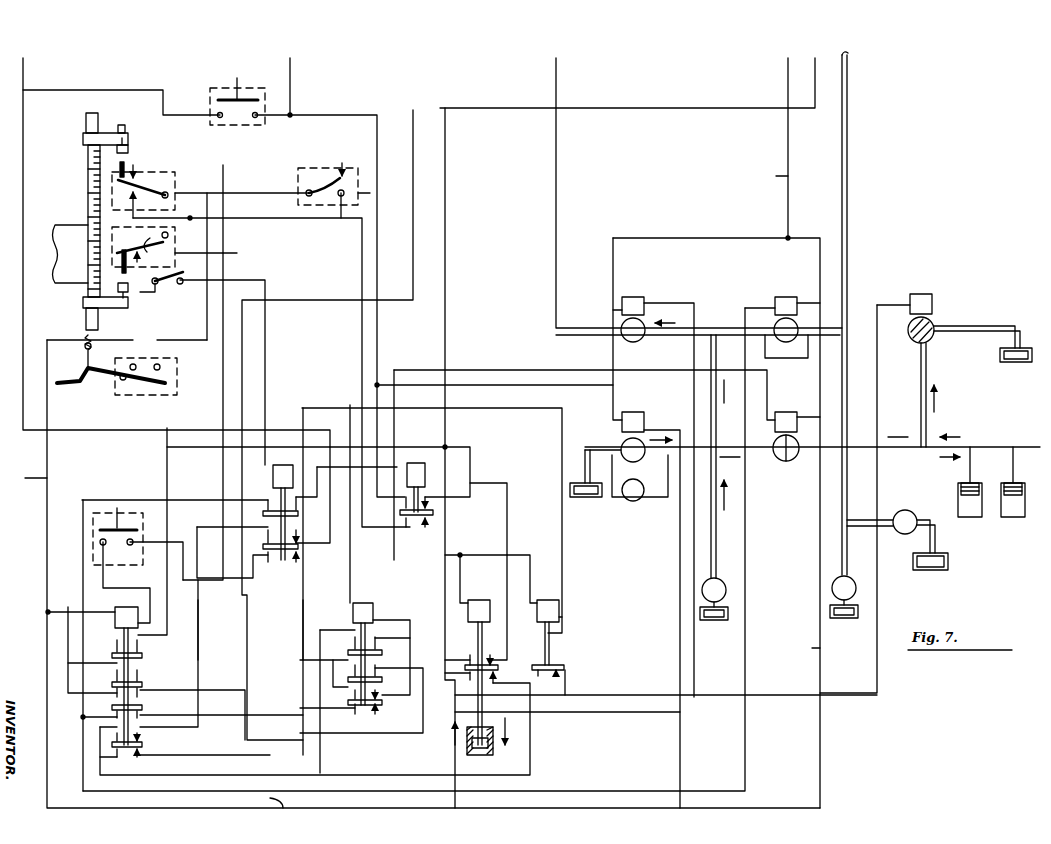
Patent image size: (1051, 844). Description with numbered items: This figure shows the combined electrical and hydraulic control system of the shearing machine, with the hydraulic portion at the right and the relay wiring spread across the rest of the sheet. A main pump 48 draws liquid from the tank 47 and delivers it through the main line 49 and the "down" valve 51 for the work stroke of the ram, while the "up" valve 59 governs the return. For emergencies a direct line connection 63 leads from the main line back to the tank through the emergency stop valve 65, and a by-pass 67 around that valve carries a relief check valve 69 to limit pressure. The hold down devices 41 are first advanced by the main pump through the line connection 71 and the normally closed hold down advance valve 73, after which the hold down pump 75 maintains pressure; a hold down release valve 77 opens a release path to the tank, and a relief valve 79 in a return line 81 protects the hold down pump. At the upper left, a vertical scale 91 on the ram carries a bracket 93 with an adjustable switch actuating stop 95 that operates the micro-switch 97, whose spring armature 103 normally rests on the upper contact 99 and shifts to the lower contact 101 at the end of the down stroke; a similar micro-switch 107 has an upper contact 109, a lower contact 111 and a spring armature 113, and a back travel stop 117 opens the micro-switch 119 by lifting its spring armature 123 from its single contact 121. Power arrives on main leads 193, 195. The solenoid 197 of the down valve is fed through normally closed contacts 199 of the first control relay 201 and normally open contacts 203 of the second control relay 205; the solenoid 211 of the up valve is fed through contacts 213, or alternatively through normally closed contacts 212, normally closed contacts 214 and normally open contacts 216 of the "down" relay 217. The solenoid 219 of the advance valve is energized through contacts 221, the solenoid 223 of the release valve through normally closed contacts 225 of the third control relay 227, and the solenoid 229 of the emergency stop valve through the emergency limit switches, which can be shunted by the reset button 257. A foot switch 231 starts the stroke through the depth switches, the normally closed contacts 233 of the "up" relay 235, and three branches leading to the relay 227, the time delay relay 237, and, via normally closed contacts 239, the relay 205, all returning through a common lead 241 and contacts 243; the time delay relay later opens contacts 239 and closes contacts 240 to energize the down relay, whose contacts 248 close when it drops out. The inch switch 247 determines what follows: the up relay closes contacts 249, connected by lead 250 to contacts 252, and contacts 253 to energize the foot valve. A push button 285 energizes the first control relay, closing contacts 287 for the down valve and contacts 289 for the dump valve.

The hold down devices 41 is at (958, 494).
The tank 47 is at (1015, 362).
The main pump 48 is at (730, 575).
The main line 49 is at (716, 440).
The "down" valve 51 is at (798, 337).
The "up" valve 59 is at (638, 340).
The direct line connection 63 is at (680, 440).
The emergency stop valve 65 is at (633, 462).
The by-pass 67 is at (614, 497).
The relief check valve 69 is at (645, 497).
The line connection 71 is at (866, 447).
The hold down advance valve 73 is at (786, 461).
The hold down pump 75 is at (852, 580).
The hold down release valve 77 is at (934, 327).
The relief valve 79 is at (902, 508).
The return line 81 is at (934, 540).
The vertical scale 91 is at (88, 160).
The bracket 93 is at (120, 125).
The switch actuating stop 95 is at (128, 150).
The micro-switch 97 is at (175, 182).
The upper contact 99 is at (134, 172).
The lower contact 101 is at (113, 203).
The spring armature 103 is at (165, 190).
The micro-switch 107 is at (310, 186).
The upper contact 109 is at (343, 168).
The lower contact 111 is at (370, 193).
The spring armature 113 is at (325, 183).
The adjustable stop 117 is at (128, 290).
The micro-switch 119 is at (168, 253).
The contact 121 is at (161, 279).
The spring armature 123 is at (143, 250).
The main lead 193 is at (23, 295).
The main lead 195 is at (456, 433).
The solenoid 197 is at (790, 298).
The normally closed contacts 199 is at (142, 707).
The control relay 201 is at (114, 682).
The normally open contacts 203 is at (380, 673).
The second control relay 205 is at (350, 658).
The solenoid 211 is at (640, 298).
The normally closed contacts 212 is at (358, 706).
The normally open contacts 213 is at (380, 696).
The normally closed contacts 214 is at (142, 684).
The normally open contacts 216 is at (430, 505).
The "down" relay 217 is at (435, 495).
The solenoid 219 is at (790, 407).
The normally open contacts 221 is at (379, 646).
The solenoid 223 is at (921, 294).
The normally closed contacts 225 is at (565, 670).
The third control relay 227 is at (570, 638).
The solenoid 229 is at (634, 412).
The foot switch 231 is at (145, 395).
The normally closed contacts 233 is at (278, 553).
The "up" relay 235 is at (271, 513).
The time delay relay 237 is at (480, 663).
The normally closed contacts 239 is at (492, 674).
The contacts 240 is at (488, 660).
The common lead 241 is at (303, 633).
The normally closed contacts 243 is at (128, 748).
The inch switch 247 is at (168, 283).
The normally closed contacts 248 is at (432, 517).
The normally open contacts 249 is at (300, 546).
The lead 250 is at (198, 622).
The normally open contacts 252 is at (142, 744).
The normally open contacts 253 is at (300, 514).
The reset button 257 is at (220, 112).
The push button 285 is at (122, 525).
The normally open contacts 287 is at (115, 649).
The normally open contacts 289 is at (141, 676).